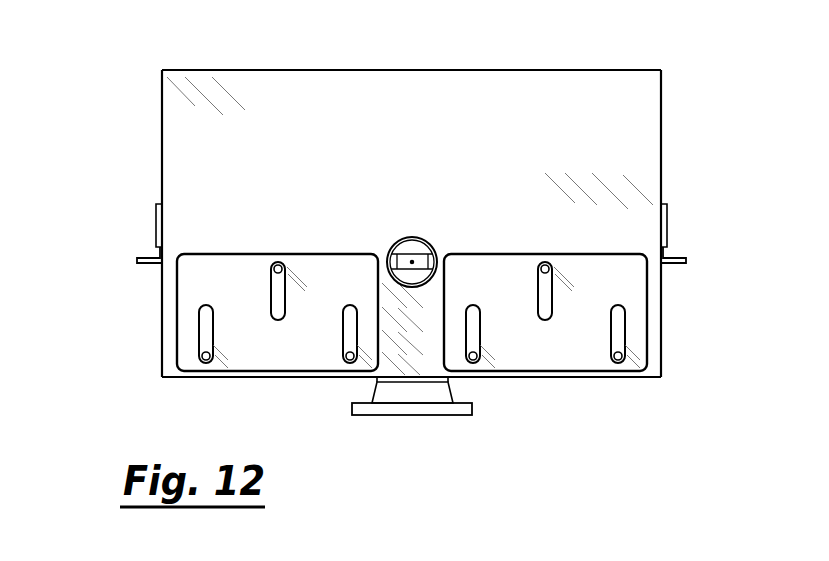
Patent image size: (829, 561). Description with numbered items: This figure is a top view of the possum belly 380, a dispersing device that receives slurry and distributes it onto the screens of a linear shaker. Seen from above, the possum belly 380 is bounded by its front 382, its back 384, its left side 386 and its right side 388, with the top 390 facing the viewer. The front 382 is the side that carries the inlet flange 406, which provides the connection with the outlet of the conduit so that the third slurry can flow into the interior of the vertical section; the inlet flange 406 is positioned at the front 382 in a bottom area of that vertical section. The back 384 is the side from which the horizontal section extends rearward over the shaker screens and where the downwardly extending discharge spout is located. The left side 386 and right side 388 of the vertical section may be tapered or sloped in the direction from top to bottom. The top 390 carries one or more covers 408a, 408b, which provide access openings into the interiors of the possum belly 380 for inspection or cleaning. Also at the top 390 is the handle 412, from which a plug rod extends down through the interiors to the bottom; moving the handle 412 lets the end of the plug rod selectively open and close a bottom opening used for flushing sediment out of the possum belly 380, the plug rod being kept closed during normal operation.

The possum belly 380 is at (328, 183).
The front 382 is at (585, 377).
The back 384 is at (581, 71).
The left side 386 is at (662, 168).
The right side 388 is at (163, 178).
The top 390 is at (262, 110).
The inlet flange 406 is at (430, 413).
The cover 408a is at (630, 292).
The cover 408b is at (193, 298).
The handle 412 is at (410, 237).